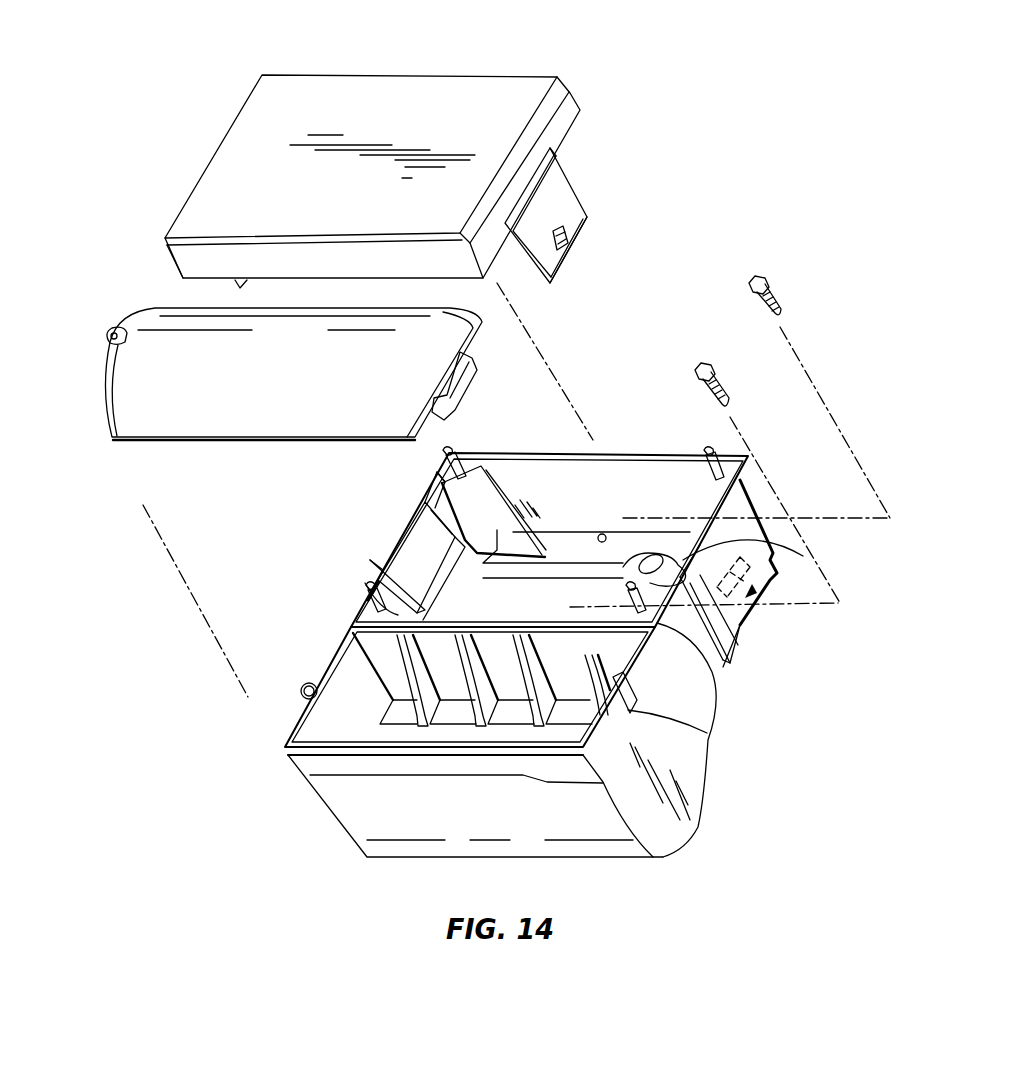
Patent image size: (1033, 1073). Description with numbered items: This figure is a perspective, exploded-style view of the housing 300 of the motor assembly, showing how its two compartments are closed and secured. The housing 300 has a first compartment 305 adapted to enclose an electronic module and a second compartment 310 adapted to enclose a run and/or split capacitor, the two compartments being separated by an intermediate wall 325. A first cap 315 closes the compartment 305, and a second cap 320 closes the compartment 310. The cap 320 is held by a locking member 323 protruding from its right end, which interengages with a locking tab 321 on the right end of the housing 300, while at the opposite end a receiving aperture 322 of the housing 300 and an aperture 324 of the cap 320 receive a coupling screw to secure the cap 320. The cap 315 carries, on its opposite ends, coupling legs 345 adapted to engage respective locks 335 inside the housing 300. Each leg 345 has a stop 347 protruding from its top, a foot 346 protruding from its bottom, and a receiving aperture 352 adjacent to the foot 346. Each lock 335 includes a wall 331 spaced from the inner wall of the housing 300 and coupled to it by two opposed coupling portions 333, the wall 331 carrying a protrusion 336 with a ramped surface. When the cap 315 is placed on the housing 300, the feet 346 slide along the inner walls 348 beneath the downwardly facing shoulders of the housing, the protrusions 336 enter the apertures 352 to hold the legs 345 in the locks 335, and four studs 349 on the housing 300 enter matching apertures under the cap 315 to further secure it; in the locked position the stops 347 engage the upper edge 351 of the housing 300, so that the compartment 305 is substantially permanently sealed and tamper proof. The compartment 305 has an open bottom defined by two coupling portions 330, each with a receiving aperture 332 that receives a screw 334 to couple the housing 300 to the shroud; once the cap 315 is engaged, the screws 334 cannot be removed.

The housing 300 is at (715, 100).
The first compartment 305 is at (639, 488).
The second compartment 310 is at (347, 690).
The first cap 315 is at (392, 92).
The second cap 320 is at (215, 410).
The locking tab 321 is at (640, 690).
The receiving aperture 322 is at (306, 688).
The locking member 323 is at (470, 383).
The aperture 324 is at (110, 322).
The intermediate wall 325 is at (490, 650).
The coupling portions 330 is at (547, 550).
The wall 331 is at (377, 567).
The receiving apertures 332 is at (648, 562).
The coupling portions 333 is at (448, 530).
The screws 334 is at (763, 280).
The locks 335 is at (417, 577).
The protrusion 336 is at (748, 636).
The coupling legs 345 is at (566, 200).
The foot 346 is at (568, 258).
The stop 347 is at (556, 160).
The inner walls 348 is at (417, 540).
The studs 349 is at (460, 470).
The upper edge 351 is at (377, 550).
The receiving aperture 352 is at (567, 222).